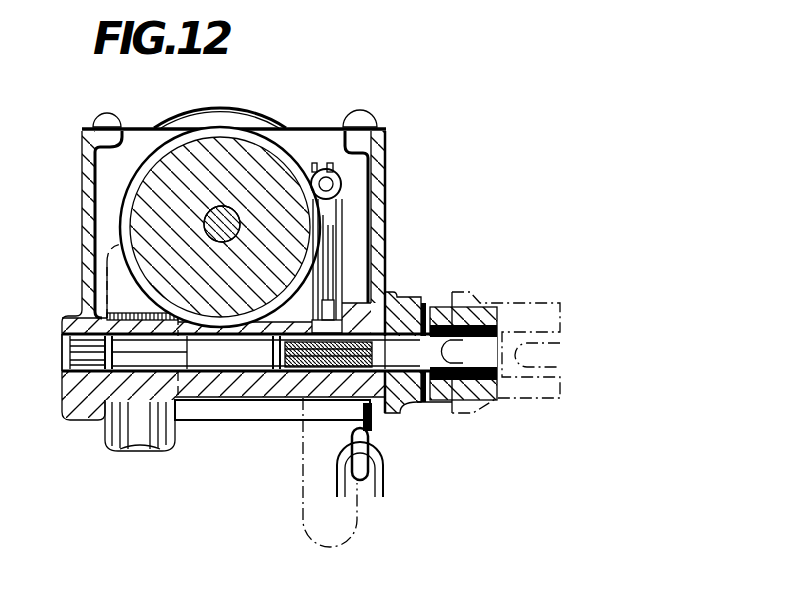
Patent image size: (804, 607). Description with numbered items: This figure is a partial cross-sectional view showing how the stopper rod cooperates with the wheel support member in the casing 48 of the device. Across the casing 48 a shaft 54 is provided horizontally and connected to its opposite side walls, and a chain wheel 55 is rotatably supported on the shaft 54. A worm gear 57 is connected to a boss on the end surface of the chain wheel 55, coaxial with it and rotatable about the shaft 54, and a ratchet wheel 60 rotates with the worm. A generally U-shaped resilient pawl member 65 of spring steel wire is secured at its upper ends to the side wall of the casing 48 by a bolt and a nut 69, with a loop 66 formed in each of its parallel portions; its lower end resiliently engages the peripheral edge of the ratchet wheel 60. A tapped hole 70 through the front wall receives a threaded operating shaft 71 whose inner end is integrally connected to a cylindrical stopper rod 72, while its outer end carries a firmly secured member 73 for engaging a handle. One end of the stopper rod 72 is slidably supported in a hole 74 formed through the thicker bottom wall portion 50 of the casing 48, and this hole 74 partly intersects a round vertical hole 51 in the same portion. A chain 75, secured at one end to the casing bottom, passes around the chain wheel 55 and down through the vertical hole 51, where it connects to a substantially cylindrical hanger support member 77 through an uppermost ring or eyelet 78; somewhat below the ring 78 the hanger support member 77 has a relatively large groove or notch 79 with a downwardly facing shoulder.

The casing 48 is at (88, 133).
The thicker bottom wall portion 50 is at (100, 317).
The round vertical hole 51 is at (118, 382).
The shaft 54 is at (231, 208).
The chain wheel 55 is at (206, 134).
The worm gear 57 is at (152, 146).
The ratchet wheel 60 is at (358, 298).
The resilient pawl member 65 is at (343, 252).
The loop 66 is at (343, 233).
The nut 69 is at (343, 188).
The tapped hole 70 is at (386, 405).
The threaded operating shaft 71 is at (287, 400).
The cylindrical stopper rod 72 is at (217, 382).
The member for engaging a handle 73 is at (455, 400).
The hole 74 is at (98, 378).
The chain 75 is at (376, 478).
The hanger support member 77 is at (115, 437).
The ring or eyelet 78 is at (128, 268).
The groove or notch 79 is at (76, 357).